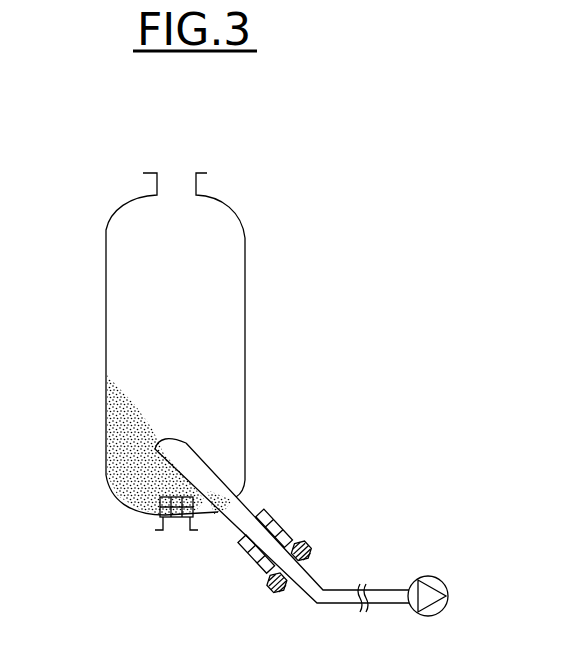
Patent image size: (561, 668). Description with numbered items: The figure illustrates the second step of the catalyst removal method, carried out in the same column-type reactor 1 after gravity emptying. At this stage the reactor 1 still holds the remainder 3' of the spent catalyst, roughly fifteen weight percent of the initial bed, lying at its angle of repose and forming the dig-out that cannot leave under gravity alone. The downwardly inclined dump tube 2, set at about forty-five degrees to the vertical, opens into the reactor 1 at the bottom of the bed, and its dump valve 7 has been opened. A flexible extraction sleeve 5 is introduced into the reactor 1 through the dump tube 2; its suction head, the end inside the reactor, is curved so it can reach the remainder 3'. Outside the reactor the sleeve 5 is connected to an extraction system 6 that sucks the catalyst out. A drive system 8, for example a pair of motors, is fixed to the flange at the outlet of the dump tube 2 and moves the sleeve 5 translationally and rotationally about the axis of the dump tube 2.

The reactor 1 is at (106, 283).
The remainder of the spent catalyst 3' is at (141, 452).
The dump tube 2 is at (247, 509).
The flexible extraction sleeve 5 is at (186, 454).
The dump valve 7 is at (256, 556).
The translational and rotational drive system 8 is at (315, 553).
The extraction system 6 is at (428, 617).